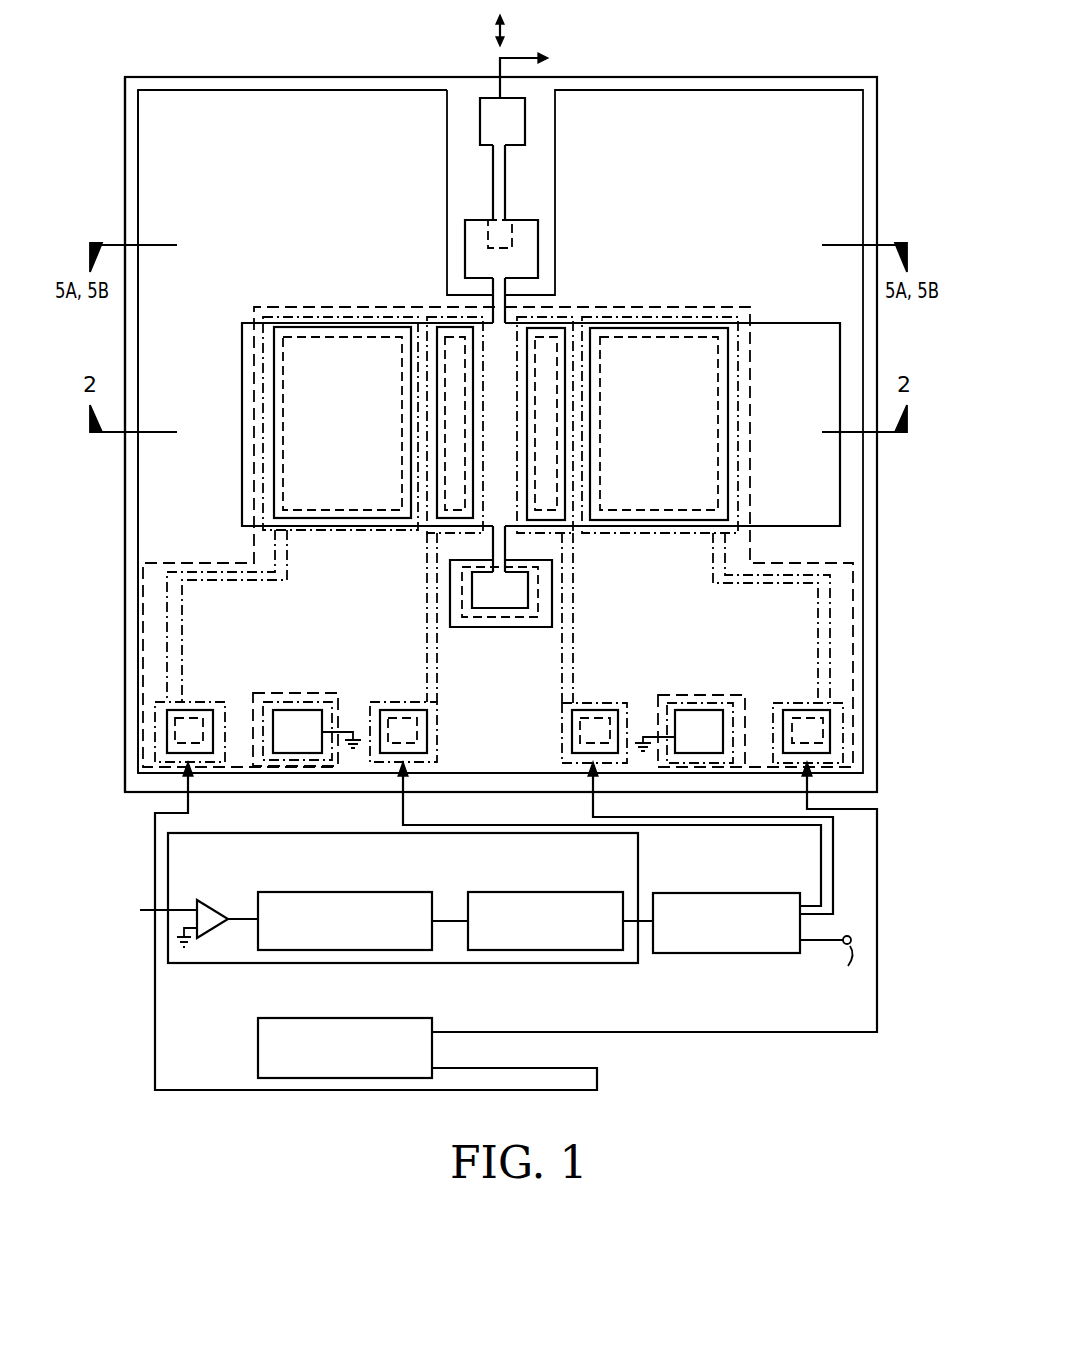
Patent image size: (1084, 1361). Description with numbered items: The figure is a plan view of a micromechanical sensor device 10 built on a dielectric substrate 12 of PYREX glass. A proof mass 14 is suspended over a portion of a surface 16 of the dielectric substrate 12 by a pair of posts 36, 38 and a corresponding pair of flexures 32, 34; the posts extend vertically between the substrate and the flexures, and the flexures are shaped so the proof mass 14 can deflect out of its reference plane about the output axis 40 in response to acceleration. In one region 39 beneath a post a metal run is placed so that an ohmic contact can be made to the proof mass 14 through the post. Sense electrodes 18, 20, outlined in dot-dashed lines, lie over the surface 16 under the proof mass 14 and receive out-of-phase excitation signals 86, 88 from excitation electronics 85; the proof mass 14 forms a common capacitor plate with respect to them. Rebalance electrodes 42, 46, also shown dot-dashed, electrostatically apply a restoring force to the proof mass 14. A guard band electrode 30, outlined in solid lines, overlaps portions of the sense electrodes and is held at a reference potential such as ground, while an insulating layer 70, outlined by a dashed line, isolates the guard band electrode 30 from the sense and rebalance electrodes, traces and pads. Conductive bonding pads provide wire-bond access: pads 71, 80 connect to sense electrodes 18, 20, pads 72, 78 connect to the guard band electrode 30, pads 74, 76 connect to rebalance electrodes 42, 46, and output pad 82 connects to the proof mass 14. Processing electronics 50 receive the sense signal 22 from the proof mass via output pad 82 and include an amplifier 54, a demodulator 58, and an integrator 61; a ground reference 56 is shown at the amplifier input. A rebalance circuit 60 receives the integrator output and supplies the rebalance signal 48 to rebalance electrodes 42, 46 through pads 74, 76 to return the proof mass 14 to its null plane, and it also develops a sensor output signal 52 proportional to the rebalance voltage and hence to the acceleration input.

The micromechanical sensor device 10 is at (820, 76).
The dielectric substrate 12 is at (125, 102).
The proof mass 14 is at (783, 325).
The surface 16 is at (132, 163).
The sense electrode 18 is at (344, 441).
The sense electrode 20 is at (661, 442).
The sense signal 22 is at (532, 57).
The guard band electrode 30 is at (865, 145).
The flexure 32 is at (490, 300).
The flexure 34 is at (508, 548).
The post 36 is at (538, 236).
The post 38 is at (490, 610).
The region 39 is at (487, 237).
The output axis 40 is at (495, 27).
The rebalance electrode 42 is at (548, 310).
The rebalance electrode 46 is at (440, 315).
The rebalance signal 48 is at (403, 798).
The processing electronics 50 is at (233, 832).
The sensor output signal 52 is at (823, 938).
The amplifier 54 is at (210, 902).
The ground reference 56 is at (240, 923).
The demodulator 58 is at (312, 890).
The rebalance circuit 60 is at (712, 890).
The integrator 61 is at (533, 890).
The insulating layer 70 is at (640, 317).
The bonding pad 71 is at (192, 700).
The bonding pad 72 is at (277, 700).
The bonding pad 74 is at (407, 700).
The bonding pad 76 is at (588, 702).
The bonding pad 78 is at (715, 702).
The bonding pad 80 is at (803, 702).
The output pad 82 is at (526, 145).
The excitation electronics 85 is at (258, 1042).
The excitation signal 86 is at (155, 1007).
The excitation signal 88 is at (700, 1030).